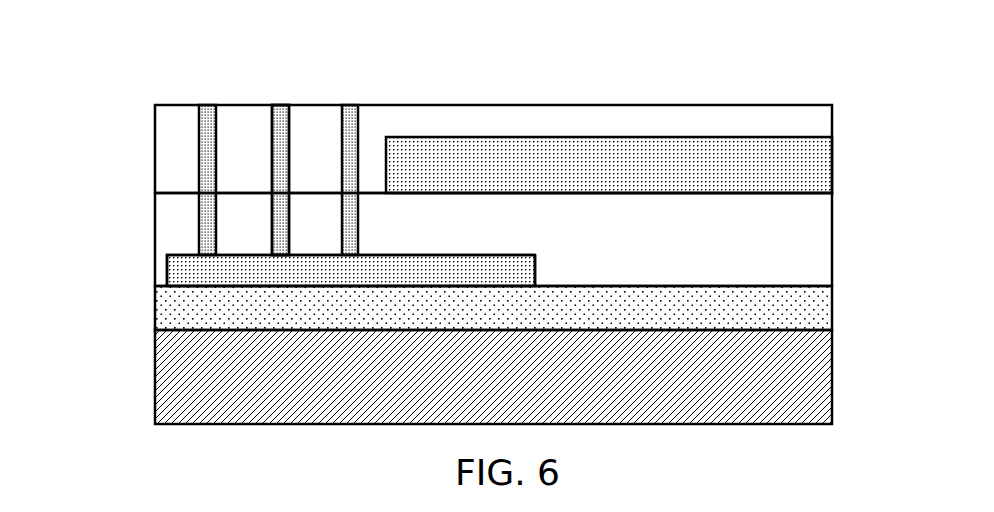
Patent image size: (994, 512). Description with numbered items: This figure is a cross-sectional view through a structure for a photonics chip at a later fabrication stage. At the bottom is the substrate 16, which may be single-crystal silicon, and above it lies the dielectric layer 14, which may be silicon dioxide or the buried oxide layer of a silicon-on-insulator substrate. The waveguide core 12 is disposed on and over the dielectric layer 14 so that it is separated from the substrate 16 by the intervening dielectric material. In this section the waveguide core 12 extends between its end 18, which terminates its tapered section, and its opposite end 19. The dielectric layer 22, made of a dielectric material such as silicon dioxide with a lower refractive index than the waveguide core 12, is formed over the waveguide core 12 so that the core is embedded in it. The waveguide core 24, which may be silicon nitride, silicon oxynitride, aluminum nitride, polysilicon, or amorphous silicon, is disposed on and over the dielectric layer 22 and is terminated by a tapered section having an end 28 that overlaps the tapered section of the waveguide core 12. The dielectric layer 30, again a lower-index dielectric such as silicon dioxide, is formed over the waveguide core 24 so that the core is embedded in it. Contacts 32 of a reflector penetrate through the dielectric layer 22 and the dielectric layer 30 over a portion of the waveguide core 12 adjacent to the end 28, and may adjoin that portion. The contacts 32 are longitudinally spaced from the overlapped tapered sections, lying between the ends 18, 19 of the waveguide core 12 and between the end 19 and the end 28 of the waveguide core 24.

The waveguide core 12 is at (395, 270).
The dielectric layer 14 is at (784, 310).
The substrate 16 is at (187, 382).
The end 18 is at (537, 272).
The end 19 is at (167, 273).
The dielectric layer 22 is at (178, 228).
The waveguide core 24 is at (785, 165).
The end 28 is at (386, 165).
The dielectric layer 30 is at (178, 178).
The contacts 32 is at (205, 133).